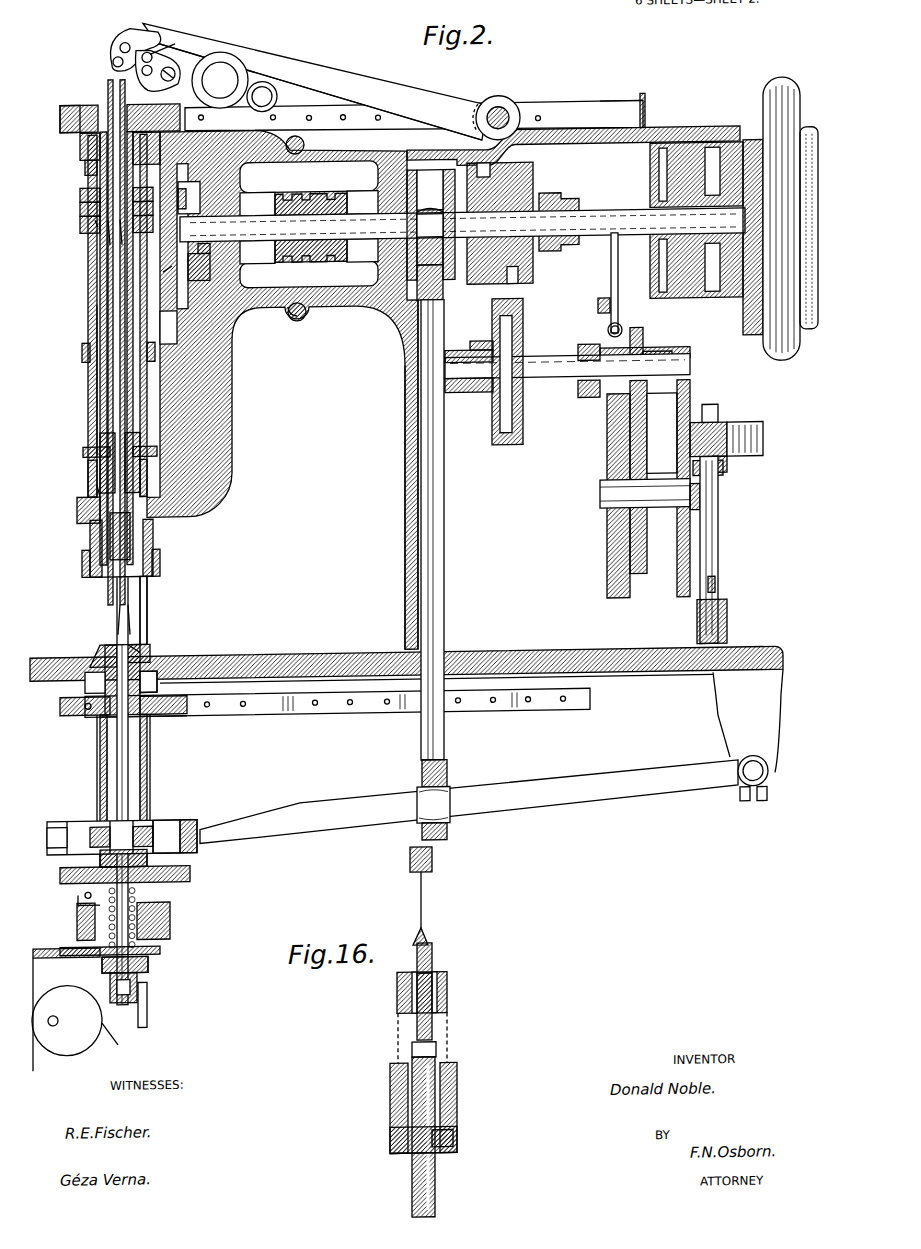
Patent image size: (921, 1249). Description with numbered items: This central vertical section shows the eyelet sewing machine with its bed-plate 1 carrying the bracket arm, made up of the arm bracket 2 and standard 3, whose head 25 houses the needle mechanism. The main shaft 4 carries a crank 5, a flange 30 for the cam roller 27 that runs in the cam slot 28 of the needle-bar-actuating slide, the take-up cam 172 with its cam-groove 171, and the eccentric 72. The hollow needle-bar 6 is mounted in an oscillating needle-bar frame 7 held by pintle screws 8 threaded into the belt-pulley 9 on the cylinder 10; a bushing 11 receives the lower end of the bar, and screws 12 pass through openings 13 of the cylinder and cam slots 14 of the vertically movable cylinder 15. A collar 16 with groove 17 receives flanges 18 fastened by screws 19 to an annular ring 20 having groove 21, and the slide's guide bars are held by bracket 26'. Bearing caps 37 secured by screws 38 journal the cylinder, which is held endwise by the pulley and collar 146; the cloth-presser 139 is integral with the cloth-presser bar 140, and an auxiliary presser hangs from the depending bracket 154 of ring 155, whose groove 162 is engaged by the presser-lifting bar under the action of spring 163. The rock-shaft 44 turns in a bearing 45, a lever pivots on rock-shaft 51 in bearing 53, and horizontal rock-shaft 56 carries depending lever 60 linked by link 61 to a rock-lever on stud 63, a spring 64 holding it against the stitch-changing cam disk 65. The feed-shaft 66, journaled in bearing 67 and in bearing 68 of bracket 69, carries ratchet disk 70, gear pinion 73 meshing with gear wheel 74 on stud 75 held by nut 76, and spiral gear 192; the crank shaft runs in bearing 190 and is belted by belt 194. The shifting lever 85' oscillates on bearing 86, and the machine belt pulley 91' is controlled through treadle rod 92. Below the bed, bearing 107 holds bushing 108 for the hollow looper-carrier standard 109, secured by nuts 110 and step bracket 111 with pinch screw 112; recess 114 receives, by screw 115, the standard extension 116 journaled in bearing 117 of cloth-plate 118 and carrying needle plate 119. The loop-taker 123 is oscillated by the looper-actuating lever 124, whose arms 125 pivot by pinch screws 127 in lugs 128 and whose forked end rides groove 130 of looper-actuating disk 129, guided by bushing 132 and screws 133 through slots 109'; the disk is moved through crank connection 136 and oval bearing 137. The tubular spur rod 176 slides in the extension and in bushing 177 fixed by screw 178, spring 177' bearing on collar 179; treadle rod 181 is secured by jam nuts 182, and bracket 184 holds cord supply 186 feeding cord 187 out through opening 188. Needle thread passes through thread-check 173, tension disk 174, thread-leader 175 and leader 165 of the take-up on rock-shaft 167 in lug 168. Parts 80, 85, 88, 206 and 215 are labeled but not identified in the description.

In FIG. 2, the bed-plate 1 is at (335, 652).
In FIG. 2, the arm bracket 2 is at (399, 128).
In FIG. 2, the standard 3 is at (404, 470).
In FIG. 2, the main or needle-bar-driving shaft 4 is at (601, 212).
In FIG. 2, the crank 5 is at (431, 234).
In FIG. 2, the hollow needle-bar 6 is at (108, 80).
In FIG. 2, the oscillating needle-bar frame 7 is at (88, 138).
In FIG. 2, the pintle screws 8 is at (60, 117).
In FIG. 2, the belt-pulley 9 is at (68, 100).
In FIG. 2, the cylinder 10 is at (100, 103).
In FIG. 2, the bushing 11 is at (100, 478).
In FIG. 2, the screws 12 is at (83, 448).
In FIG. 2, the openings 13 is at (140, 440).
In FIG. 2, the cam slots 14 is at (88, 470).
In FIG. 2, the vertically movable cylinder 15 is at (88, 393).
In FIG. 2, the collar 16 is at (108, 218).
In FIG. 2, the groove 17 is at (120, 220).
In FIG. 2, the flanges 18 is at (92, 222).
In FIG. 2, the screws 19 is at (80, 190).
In FIG. 2, the annular ring 20 is at (82, 218).
In FIG. 2, the groove 21 is at (80, 205).
In FIG. 2, the head of the bracket arm 25 is at (232, 408).
In FIG. 2, the bracket 26' is at (185, 327).
In FIG. 2, the cam roller 27 is at (196, 188).
In FIG. 2, the cam slot 28 is at (159, 271).
In FIG. 2, the flange 30 is at (196, 280).
In FIG. 2, the bearing cap 37 is at (80, 150).
In FIG. 2, the screws 38 is at (82, 348).
In FIG. 2, the rock-shaft 44 is at (296, 322).
In FIG. 2, the bearing 45 is at (306, 315).
In FIG. 2, the rock-shaft 51 is at (309, 188).
In FIG. 2, the bearing 53 is at (309, 264).
In FIG. 2, the horizontally arranged rock-shaft 56 is at (204, 275).
In FIG. 2, the depending lever 60 is at (618, 296).
In FIG. 2, the link 61 is at (598, 312).
In FIG. 2, the stud 63 is at (305, 146).
In FIG. 2, the spring 64 is at (622, 331).
In FIG. 2, the stitch-changing cam disk 65 is at (720, 150).
In FIG. 2, the feed-shaft 66 is at (548, 360).
In FIG. 2, the bearing 67 is at (690, 360).
In FIG. 2, the bearing 68 is at (462, 395).
In FIG. 2, the bracket 69 is at (450, 358).
In FIG. 2, the ratchet disk 70 is at (510, 447).
In FIG. 2, the eccentric 72 is at (566, 201).
In FIG. 2, the gear pinion 73 is at (645, 350).
In FIG. 2, the gear wheel 74 is at (640, 562).
In FIG. 2, the stud 75 is at (602, 497).
In FIG. 2, the nut 76 is at (702, 510).
In FIG. 2, the hub 80 is at (748, 312).
In FIG. 2, the bearing housing 85 is at (696, 201).
In FIG. 2, the shifting lever 85' is at (744, 467).
In FIG. 2, the bearing 86 is at (735, 430).
In FIG. 2, the knob 88 is at (765, 440).
In FIG. 2, the machine belt pulley 91' is at (790, 205).
In FIG. 2, the treadle rod 92 is at (722, 570).
In FIG. 2, the bearing 107 is at (165, 930).
In FIG. 2, the bushing 108 is at (165, 915).
In FIG. 2, the hollow looper-carrier standard 109 is at (143, 782).
In FIG. 16, the hollow looper-carrier standard 109 is at (442, 1108).
In FIG. 2, the slots 109' is at (123, 782).
In FIG. 2, the nuts 110 is at (160, 946).
In FIG. 2, the step bracket 111 is at (190, 872).
In FIG. 2, the pinch screw 112 is at (85, 890).
In FIG. 2, the recess 114 is at (70, 710).
In FIG. 2, the screw 115 is at (97, 720).
In FIG. 2, the standard extension 116 is at (200, 655).
In FIG. 16, the standard extension 116 is at (447, 998).
In FIG. 2, the bearing 117 is at (150, 658).
In FIG. 2, the cloth-plate 118 is at (158, 712).
In FIG. 2, the throat or needle plate 119 is at (150, 648).
In FIG. 2, the loop-taker 123 is at (157, 688).
In FIG. 2, the looper-actuating lever 124 is at (551, 803).
In FIG. 2, the arms 125 is at (770, 768).
In FIG. 2, the pinch screws 127 is at (767, 797).
In FIG. 2, the lugs 128 is at (778, 720).
In FIG. 2, the looper-actuating disk 129 is at (165, 822).
In FIG. 2, the groove 130 is at (197, 830).
In FIG. 2, the bushing 132 is at (140, 812).
In FIG. 2, the screws 133 is at (126, 837).
In FIG. 2, the crank connection 136 is at (444, 584).
In FIG. 2, the oval bearing 137 is at (447, 825).
In FIG. 2, the cloth-presser 139 is at (95, 648).
In FIG. 2, the cloth-presser bar 140 is at (150, 594).
In FIG. 2, the collar 146 is at (85, 165).
In FIG. 2, the depending bracket 154 is at (117, 590).
In FIG. 2, the ring 155 is at (150, 556).
In FIG. 2, the groove 162 is at (160, 566).
In FIG. 2, the spring 163 is at (140, 632).
In FIG. 2, the thread-leader 165 is at (126, 36).
In FIG. 2, the rock-shaft 167 is at (500, 114).
In FIG. 2, the lug 168 is at (115, 622).
In FIG. 16, the lug 168 is at (425, 936).
In FIG. 2, the cam-groove 171 is at (520, 284).
In FIG. 2, the take-up cam 172 is at (535, 176).
In FIG. 2, the thread-check 173 is at (310, 48).
In FIG. 2, the tension disk 174 is at (226, 60).
In FIG. 2, the thread-leader 175 is at (162, 44).
In FIG. 2, the tubular spur rod 176 is at (128, 752).
In FIG. 16, the tubular spur rod 176 is at (432, 1032).
In FIG. 2, the bushing 177 is at (96, 977).
In FIG. 16, the bushing 177 is at (410, 1166).
In FIG. 2, the spring 177' is at (146, 917).
In FIG. 16, the screw 178 is at (453, 1138).
In FIG. 2, the collar 179 is at (147, 855).
In FIG. 16, the collar 179 is at (447, 978).
In FIG. 2, the treadle rod 181 is at (147, 1020).
In FIG. 2, the jam nuts 182 is at (140, 975).
In FIG. 2, the bracket 184 is at (352, 74).
In FIG. 2, the cord supply 186 is at (67, 1014).
In FIG. 2, the cord 187 is at (119, 1044).
In FIG. 16, the opening 188 is at (430, 952).
In FIG. 2, the bearing 190 is at (546, 712).
In FIG. 2, the spiral gear 192 is at (585, 402).
In FIG. 2, the belt 194 is at (644, 106).
In FIG. 2, the block 206 is at (722, 590).
In FIG. 2, the block 215 is at (728, 612).